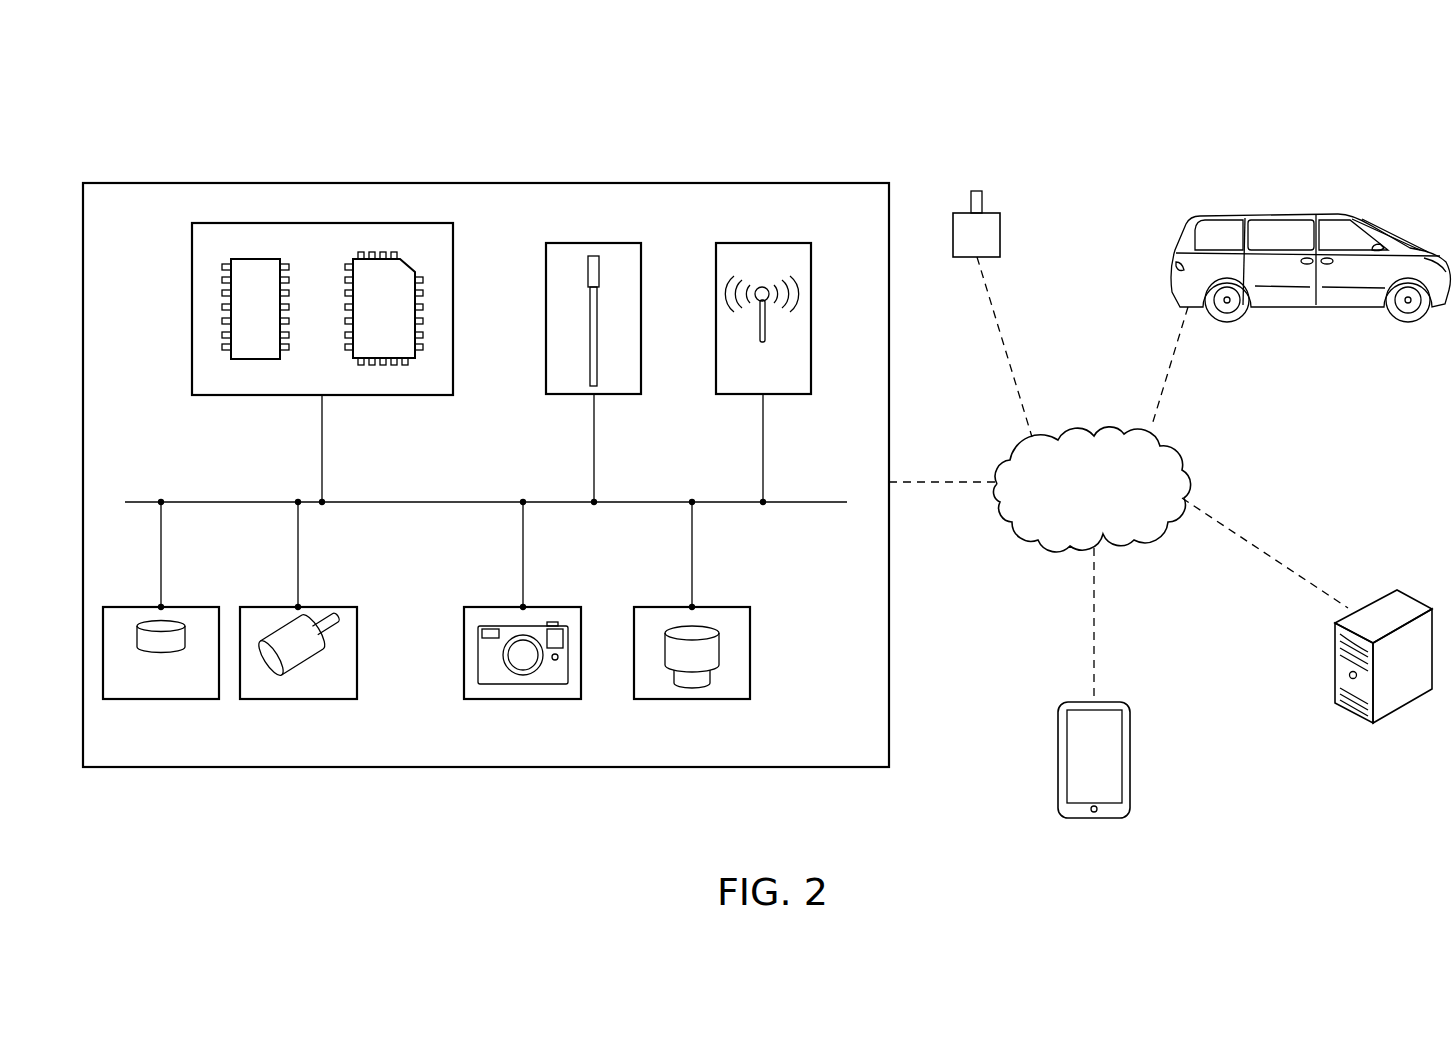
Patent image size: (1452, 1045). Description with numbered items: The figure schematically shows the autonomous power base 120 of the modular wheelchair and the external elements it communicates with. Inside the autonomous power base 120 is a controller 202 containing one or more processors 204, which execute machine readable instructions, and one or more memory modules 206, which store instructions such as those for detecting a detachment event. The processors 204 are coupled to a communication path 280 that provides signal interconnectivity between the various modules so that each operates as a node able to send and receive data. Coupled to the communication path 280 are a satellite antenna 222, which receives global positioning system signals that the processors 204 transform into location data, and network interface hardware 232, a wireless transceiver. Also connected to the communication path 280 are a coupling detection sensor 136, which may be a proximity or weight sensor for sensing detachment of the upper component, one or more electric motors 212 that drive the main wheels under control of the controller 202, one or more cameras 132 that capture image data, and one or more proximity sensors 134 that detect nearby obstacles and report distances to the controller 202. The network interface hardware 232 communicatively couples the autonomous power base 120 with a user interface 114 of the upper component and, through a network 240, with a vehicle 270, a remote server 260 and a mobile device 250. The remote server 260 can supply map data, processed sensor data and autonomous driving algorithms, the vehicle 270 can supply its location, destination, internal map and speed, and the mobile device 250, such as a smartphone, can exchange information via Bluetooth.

The autonomous power base 120 is at (486, 416).
The controller 202 is at (305, 223).
The processors 204 is at (221, 262).
The memory modules 206 is at (417, 266).
The satellite antenna 222 is at (597, 243).
The network interface hardware 232 is at (763, 243).
The communication path 280 is at (810, 504).
The coupling detection sensor 136 is at (161, 702).
The electric motors 212 is at (298, 702).
The cameras 132 is at (527, 702).
The proximity sensors 134 is at (752, 654).
The user interface 114 is at (1001, 232).
The network 240 is at (1185, 462).
The vehicle 270 is at (1320, 215).
The remote server 260 is at (1408, 592).
The mobile device 250 is at (1131, 760).